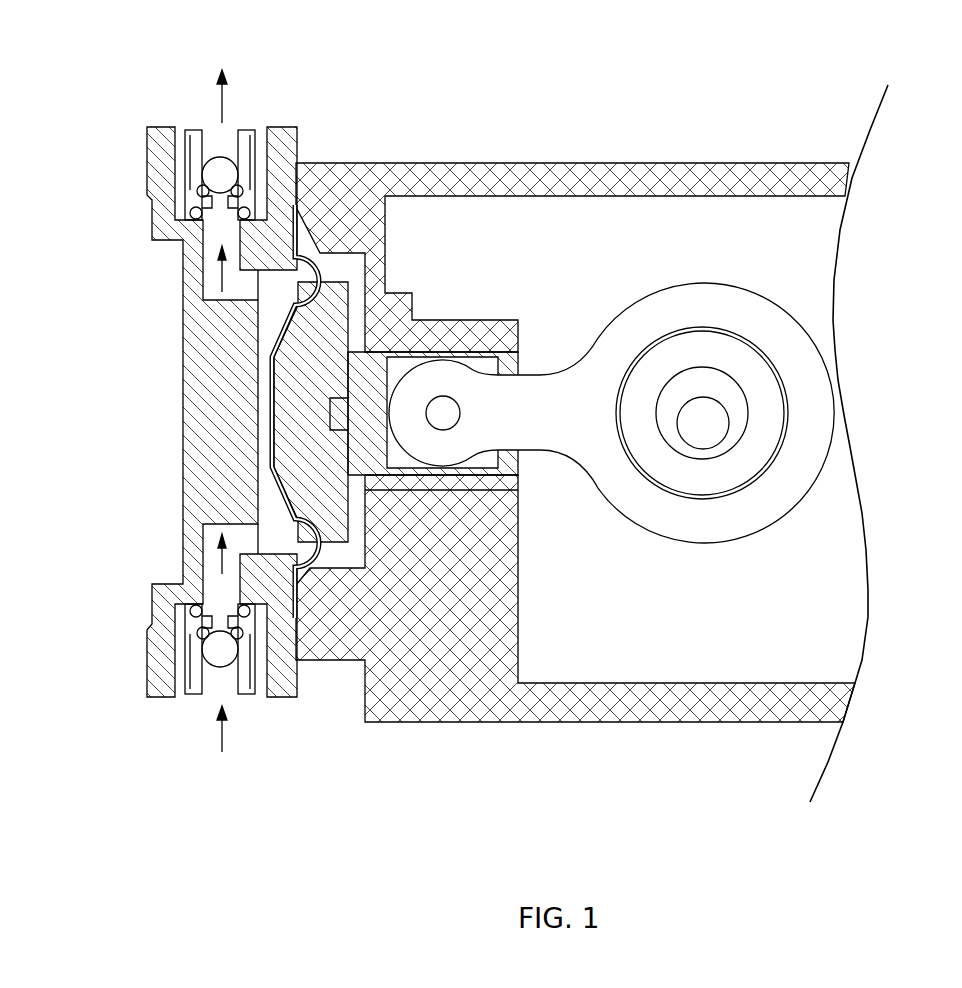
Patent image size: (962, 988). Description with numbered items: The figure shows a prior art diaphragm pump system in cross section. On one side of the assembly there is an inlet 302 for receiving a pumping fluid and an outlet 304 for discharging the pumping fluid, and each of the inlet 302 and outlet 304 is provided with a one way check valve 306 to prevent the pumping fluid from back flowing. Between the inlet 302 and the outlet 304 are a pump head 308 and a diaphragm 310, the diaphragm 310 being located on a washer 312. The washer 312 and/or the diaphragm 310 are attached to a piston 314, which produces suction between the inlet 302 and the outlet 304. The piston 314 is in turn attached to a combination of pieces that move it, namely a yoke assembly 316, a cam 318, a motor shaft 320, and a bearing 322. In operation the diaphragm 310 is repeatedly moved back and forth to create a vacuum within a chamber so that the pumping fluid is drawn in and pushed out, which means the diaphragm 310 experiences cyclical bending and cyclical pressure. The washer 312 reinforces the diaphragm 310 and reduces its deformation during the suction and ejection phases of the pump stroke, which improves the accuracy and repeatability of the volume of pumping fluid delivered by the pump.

The inlet 302 is at (257, 762).
The outlet 304 is at (264, 62).
The one way check valve 306 is at (188, 172).
The pump head 308 is at (185, 480).
The diaphragm 310 is at (270, 367).
The washer 312 is at (323, 337).
The piston 314 is at (372, 474).
The yoke assembly 316 is at (798, 330).
The cam 318 is at (722, 388).
The motor shaft 320 is at (712, 426).
The bearing 322 is at (740, 462).